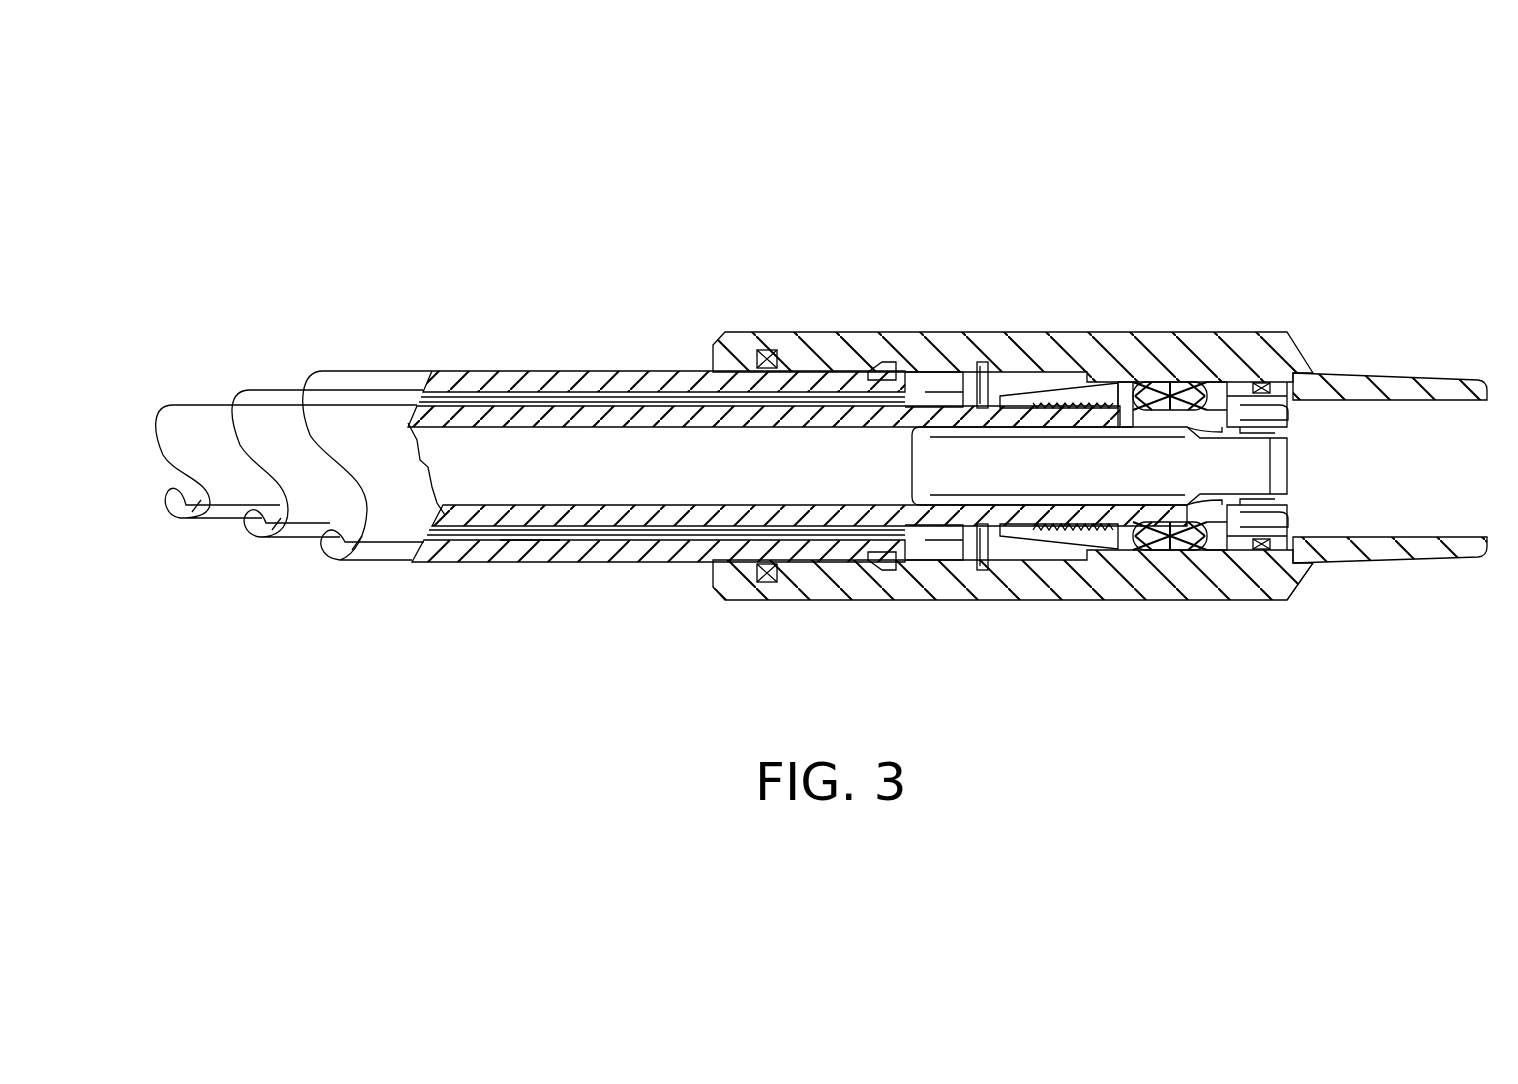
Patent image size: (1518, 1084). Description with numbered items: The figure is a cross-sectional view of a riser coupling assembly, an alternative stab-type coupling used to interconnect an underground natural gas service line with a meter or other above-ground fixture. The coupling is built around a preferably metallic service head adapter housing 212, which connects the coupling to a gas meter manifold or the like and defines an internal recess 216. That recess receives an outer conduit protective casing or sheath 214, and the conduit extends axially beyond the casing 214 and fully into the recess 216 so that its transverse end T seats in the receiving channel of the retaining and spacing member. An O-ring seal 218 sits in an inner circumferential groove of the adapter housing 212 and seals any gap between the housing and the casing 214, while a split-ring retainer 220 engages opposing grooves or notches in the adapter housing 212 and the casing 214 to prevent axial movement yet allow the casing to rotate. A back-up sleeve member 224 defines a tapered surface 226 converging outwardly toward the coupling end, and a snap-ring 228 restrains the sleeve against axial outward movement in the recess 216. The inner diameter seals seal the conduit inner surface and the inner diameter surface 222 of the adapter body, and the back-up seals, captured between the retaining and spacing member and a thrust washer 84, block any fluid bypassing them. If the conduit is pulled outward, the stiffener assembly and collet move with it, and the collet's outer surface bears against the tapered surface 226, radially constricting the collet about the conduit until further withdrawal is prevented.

The thrust washer 84 is at (1117, 422).
The service head adapter housing 212 is at (1287, 586).
The outer conduit protective casing 214 is at (537, 548).
The internal recess 216 is at (968, 556).
The O-ring seal 218 is at (768, 350).
The split-ring retainer 220 is at (890, 360).
The inner diameter surface of adapter body 222 is at (1203, 552).
The back-up sleeve member 224 is at (1007, 560).
The tapered surface 226 is at (1000, 395).
The snap-ring 228 is at (985, 362).
The transverse end of conduit T is at (1247, 432).